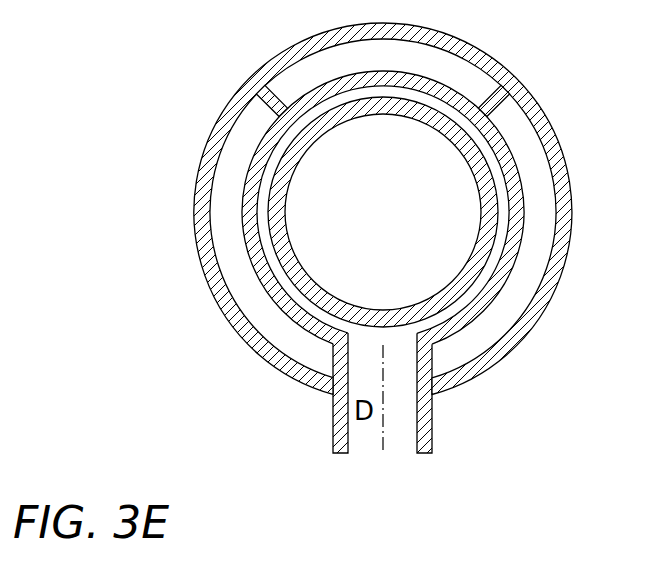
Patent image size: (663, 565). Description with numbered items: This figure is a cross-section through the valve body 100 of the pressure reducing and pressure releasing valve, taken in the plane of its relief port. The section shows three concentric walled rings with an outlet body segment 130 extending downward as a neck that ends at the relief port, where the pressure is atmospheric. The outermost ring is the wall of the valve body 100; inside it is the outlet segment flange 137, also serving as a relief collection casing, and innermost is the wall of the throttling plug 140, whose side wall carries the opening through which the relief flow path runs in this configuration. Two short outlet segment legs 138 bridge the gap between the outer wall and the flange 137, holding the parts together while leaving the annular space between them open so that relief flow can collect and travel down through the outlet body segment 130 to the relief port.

The valve body 100 is at (483, 48).
The outlet body segment 130 is at (432, 412).
The outlet segment flange 137 is at (493, 128).
The outlet segment leg 138 is at (263, 97).
The throttling plug 140 is at (490, 192).